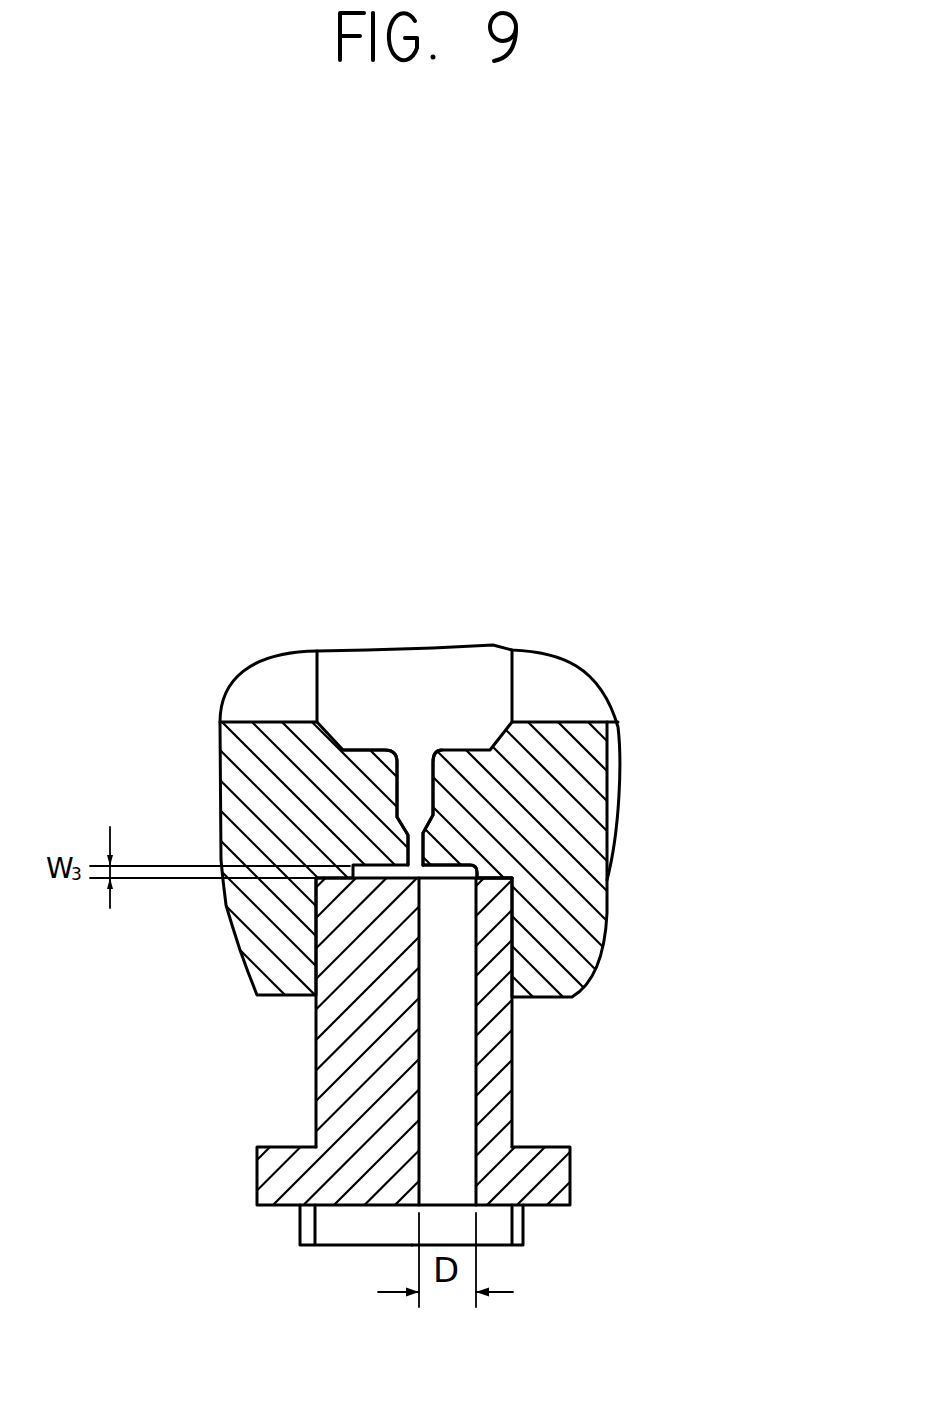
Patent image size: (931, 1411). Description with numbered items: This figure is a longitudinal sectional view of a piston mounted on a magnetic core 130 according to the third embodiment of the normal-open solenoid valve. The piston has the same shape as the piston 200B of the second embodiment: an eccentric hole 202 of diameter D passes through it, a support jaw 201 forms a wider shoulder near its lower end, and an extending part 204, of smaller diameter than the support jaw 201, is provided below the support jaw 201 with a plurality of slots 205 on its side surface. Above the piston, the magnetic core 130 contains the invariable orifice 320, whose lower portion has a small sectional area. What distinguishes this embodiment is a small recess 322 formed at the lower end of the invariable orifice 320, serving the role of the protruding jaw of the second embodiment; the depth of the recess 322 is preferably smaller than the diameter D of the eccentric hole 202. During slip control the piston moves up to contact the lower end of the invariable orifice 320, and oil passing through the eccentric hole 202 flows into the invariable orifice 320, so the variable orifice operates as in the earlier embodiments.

The magnetic core 130 is at (242, 937).
The invariable orifice 320 is at (408, 777).
The recess 322 is at (467, 851).
The piston 200B is at (465, 1050).
The eccentric hole 202 is at (450, 1100).
The support jaw 201 is at (572, 1170).
The extending part 204 is at (520, 1224).
The slots 205 is at (308, 1224).